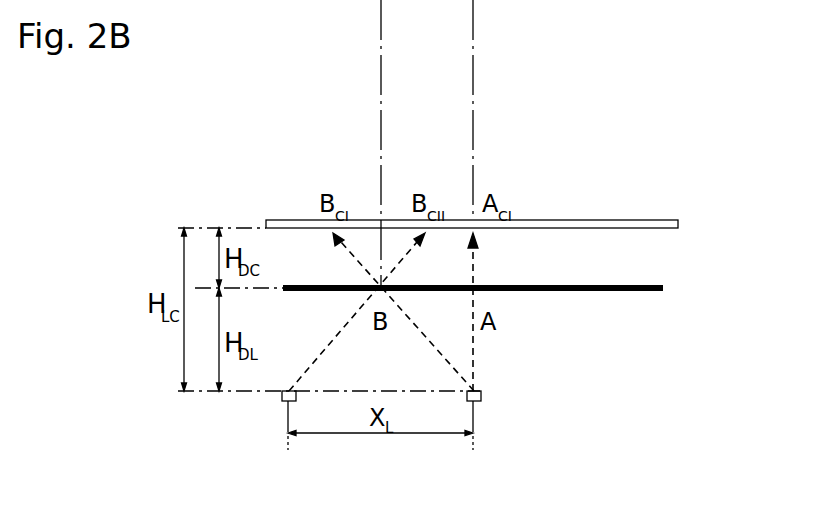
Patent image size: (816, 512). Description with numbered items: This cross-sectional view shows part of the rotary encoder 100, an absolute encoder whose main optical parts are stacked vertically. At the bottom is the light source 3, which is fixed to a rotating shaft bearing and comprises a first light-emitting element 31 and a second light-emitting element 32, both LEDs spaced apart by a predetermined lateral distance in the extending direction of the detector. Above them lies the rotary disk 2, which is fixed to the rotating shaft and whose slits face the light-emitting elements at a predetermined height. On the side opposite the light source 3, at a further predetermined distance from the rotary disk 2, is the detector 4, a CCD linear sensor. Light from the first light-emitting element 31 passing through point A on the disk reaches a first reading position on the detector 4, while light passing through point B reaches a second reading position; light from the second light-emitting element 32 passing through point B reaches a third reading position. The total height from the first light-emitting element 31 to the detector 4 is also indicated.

The rotary encoder 100 is at (657, 155).
The detector 4 is at (653, 217).
The rotary disk 2 is at (655, 287).
The light source 3 is at (425, 448).
The first light-emitting element 31 is at (482, 402).
The second light-emitting element 32 is at (280, 402).